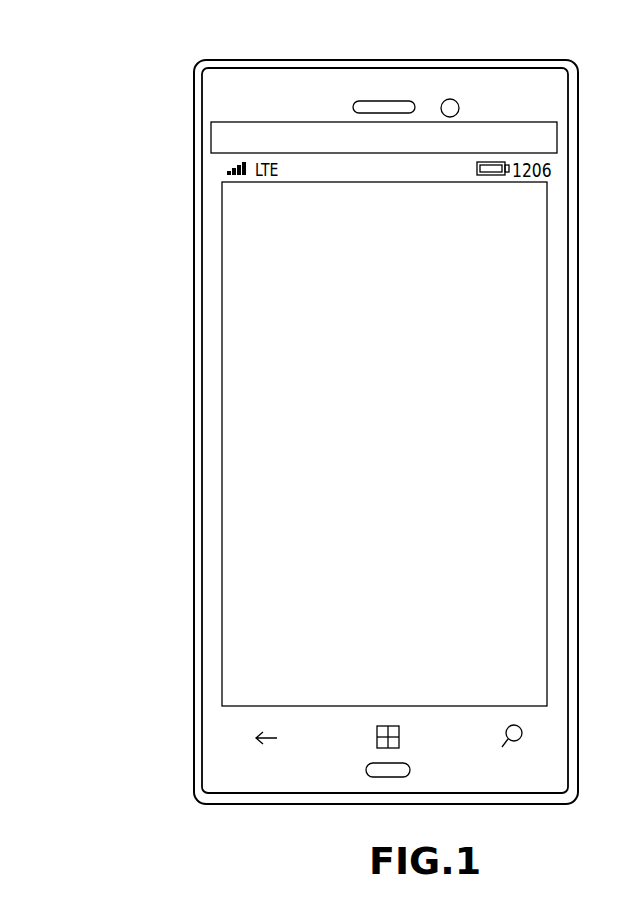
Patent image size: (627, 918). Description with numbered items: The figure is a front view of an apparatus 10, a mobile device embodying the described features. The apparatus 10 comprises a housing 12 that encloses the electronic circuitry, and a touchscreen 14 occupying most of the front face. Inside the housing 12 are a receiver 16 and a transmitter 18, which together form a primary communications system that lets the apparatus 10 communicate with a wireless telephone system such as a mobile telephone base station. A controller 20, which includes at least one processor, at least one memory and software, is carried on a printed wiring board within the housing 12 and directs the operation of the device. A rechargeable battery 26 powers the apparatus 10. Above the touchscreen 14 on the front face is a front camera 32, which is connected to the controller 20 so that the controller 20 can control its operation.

The apparatus 10 is at (150, 102).
The housing 12 is at (193, 360).
The touchscreen 14 is at (254, 506).
The receiver 16 is at (193, 555).
The transmitter 18 is at (193, 592).
The controller 20 is at (193, 626).
The rechargeable battery 26 is at (193, 690).
The front camera 32 is at (452, 99).